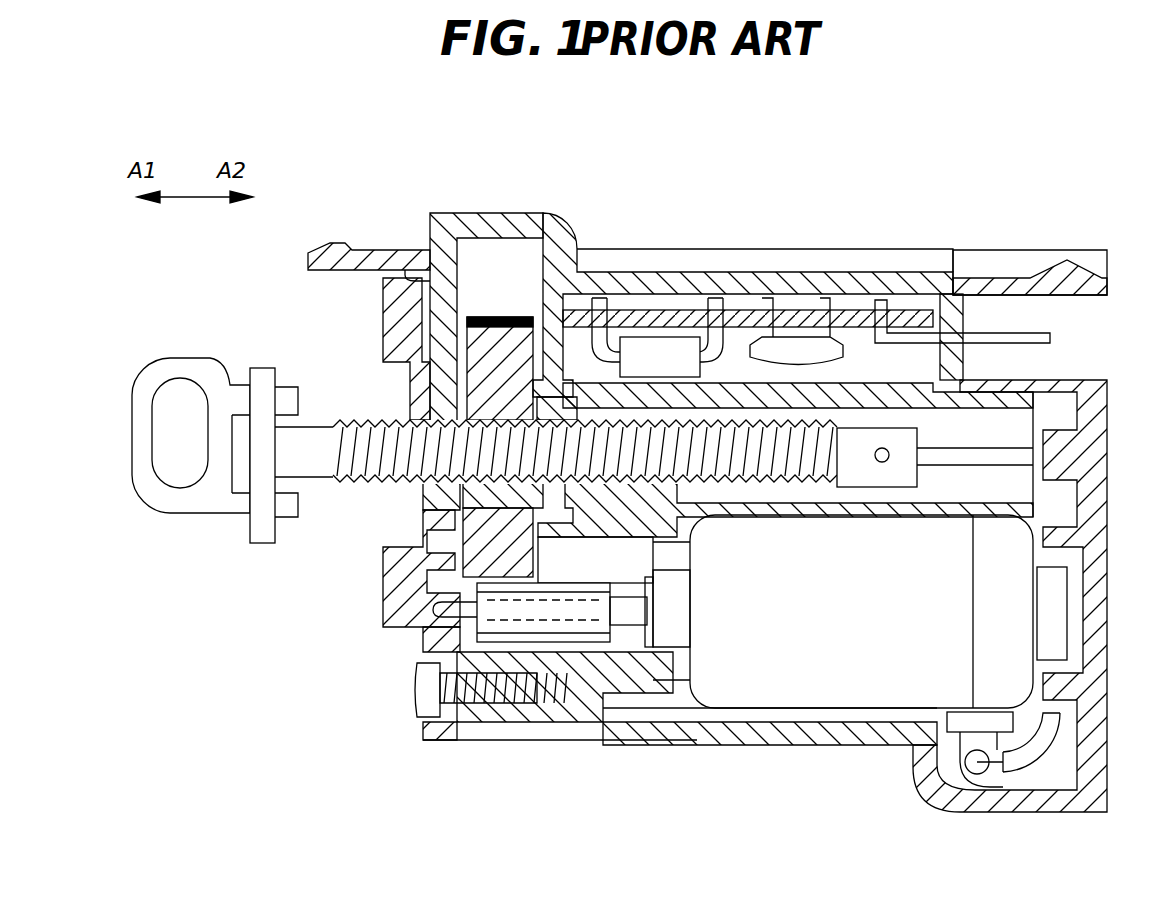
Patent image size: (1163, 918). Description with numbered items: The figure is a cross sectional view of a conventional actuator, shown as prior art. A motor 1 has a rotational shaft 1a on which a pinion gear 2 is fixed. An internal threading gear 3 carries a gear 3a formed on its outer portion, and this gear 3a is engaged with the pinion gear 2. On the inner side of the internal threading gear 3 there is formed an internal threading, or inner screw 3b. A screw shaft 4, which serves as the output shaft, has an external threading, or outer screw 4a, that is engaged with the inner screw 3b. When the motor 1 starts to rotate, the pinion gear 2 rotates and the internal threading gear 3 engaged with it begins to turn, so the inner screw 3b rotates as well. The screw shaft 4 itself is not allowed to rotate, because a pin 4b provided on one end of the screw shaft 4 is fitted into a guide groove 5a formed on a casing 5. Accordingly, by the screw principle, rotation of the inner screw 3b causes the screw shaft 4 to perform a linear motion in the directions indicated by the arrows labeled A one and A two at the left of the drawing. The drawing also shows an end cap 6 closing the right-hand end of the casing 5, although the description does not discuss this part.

The motor 1 is at (762, 700).
The rotational shaft 1a is at (432, 617).
The pinion gear 2 is at (568, 640).
The internal threading gear 3 is at (488, 266).
The gear 3a is at (473, 317).
The internal threading (inner screw) 3b is at (457, 370).
The screw shaft (output shaft) 4 is at (352, 484).
The external threading (outer screw) 4a is at (385, 500).
The pin 4b is at (880, 447).
The casing 5 is at (567, 250).
The guide groove 5a is at (995, 448).
The end cap 6 is at (1108, 445).